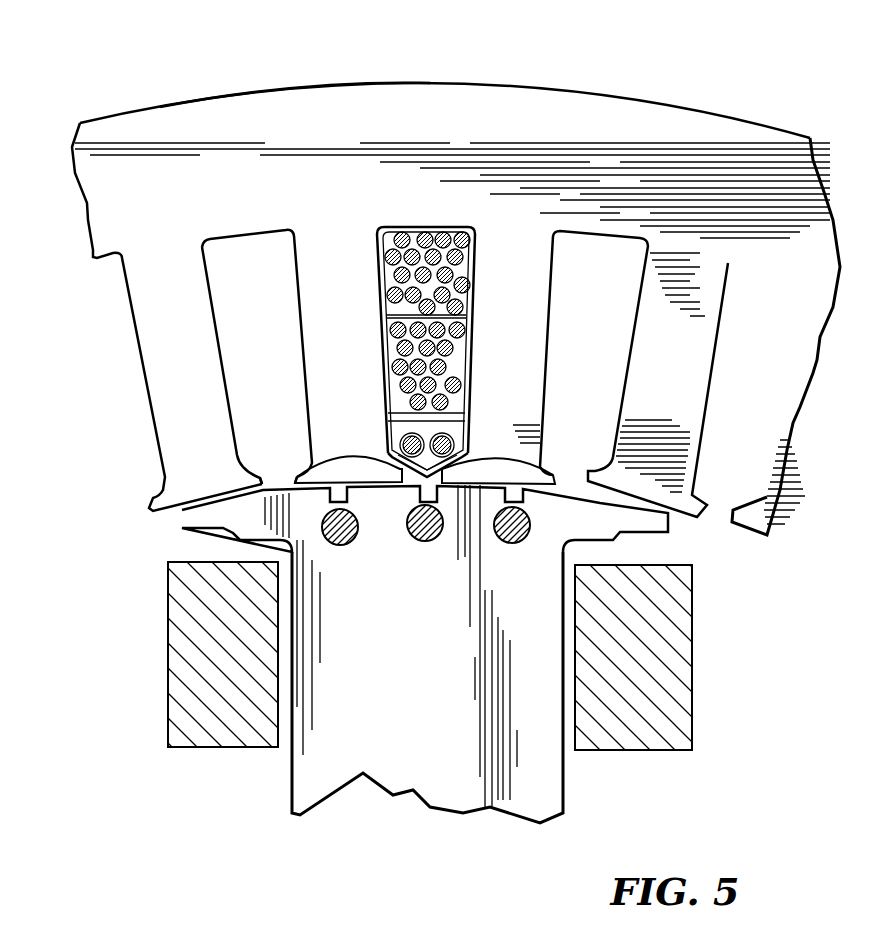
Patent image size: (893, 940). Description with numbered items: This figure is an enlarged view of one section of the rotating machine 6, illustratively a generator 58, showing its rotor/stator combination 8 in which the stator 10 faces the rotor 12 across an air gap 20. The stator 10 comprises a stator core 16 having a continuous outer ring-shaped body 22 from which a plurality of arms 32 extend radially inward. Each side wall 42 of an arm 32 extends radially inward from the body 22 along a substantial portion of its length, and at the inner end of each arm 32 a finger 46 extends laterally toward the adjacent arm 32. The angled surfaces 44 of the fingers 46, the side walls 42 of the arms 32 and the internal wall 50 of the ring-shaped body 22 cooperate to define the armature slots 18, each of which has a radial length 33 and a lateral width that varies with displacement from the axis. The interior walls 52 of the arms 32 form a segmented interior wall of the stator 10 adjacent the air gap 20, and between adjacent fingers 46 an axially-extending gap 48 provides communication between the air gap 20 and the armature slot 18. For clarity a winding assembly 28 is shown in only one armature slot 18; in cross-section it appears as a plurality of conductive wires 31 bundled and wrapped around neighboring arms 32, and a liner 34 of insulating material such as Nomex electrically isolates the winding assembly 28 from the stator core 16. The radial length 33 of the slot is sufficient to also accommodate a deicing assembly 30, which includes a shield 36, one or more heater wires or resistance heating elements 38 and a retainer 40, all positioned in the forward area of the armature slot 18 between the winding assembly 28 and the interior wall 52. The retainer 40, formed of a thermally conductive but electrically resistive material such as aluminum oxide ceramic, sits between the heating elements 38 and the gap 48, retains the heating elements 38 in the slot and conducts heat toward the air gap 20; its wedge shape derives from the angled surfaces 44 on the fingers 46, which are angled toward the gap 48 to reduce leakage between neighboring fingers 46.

The rotating machine 6 is at (158, 92).
The rotor/stator combination 8 is at (550, 47).
The stator 10 is at (378, 95).
The rotor 12 is at (409, 676).
The stator core 16 is at (194, 188).
The armature slot 18 is at (248, 311).
The air gap 20 is at (345, 488).
The ring-shaped body 22 is at (491, 120).
The winding assembly 28 is at (478, 407).
The deicing assembly 30 is at (477, 461).
The conductive wires 31 is at (423, 233).
The arm 32 is at (144, 310).
The radial length 33 is at (605, 240).
The liner 34 is at (473, 230).
The shield 36 is at (388, 427).
The heating elements 38 is at (392, 439).
The retainer 40 is at (423, 470).
The side wall 42 is at (222, 357).
The angled surfaces 44 is at (250, 477).
The finger 46 is at (350, 463).
The axially-extending gap 48 is at (278, 478).
The internal wall 50 is at (245, 233).
The interior wall 52 is at (655, 513).
The generator 58 is at (273, 80).